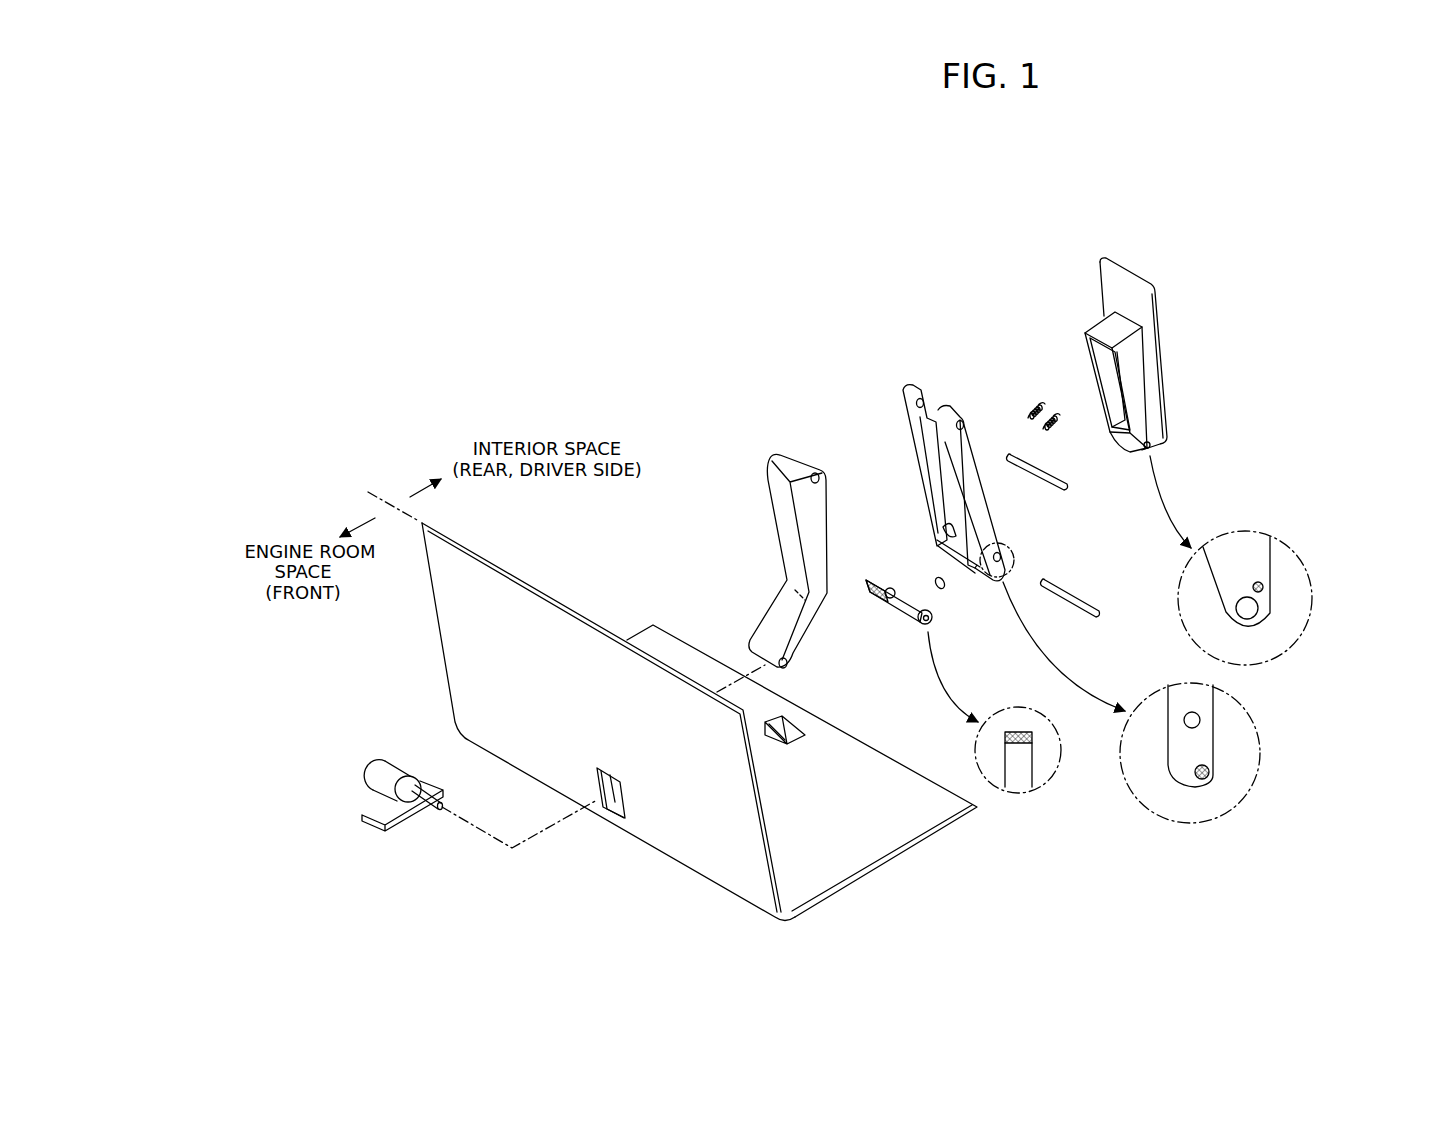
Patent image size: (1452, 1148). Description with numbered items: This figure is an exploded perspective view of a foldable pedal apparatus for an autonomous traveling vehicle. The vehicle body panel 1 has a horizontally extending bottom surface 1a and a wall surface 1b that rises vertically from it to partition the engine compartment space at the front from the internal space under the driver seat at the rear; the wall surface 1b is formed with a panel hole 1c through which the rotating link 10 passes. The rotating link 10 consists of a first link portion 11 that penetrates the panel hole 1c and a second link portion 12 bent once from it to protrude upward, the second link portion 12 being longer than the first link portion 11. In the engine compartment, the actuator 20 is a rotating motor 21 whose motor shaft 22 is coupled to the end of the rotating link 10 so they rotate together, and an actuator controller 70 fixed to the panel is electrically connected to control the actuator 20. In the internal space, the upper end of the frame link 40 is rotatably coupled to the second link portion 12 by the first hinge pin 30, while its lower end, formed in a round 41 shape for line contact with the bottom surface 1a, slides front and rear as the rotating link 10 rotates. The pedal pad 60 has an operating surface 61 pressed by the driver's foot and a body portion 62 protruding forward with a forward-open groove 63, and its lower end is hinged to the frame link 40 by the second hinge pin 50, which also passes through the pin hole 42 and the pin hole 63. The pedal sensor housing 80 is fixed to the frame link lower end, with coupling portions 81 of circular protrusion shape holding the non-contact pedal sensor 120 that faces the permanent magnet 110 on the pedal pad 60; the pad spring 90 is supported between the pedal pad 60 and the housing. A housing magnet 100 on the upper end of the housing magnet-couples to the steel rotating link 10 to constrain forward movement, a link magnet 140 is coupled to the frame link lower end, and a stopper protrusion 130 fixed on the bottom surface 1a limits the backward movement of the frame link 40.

The vehicle body panel 1 is at (672, 725).
The bottom surface 1a is at (860, 860).
The wall surface 1b is at (581, 722).
The panel hole 1c is at (610, 812).
The rotating link 10 is at (765, 529).
The first link portion 11 is at (785, 607).
The second link portion 12 is at (782, 512).
The actuator 20 is at (373, 798).
The rotating motor 21 is at (385, 778).
The motor shaft 22 is at (430, 812).
The first hinge pin 30 is at (1060, 484).
The frame link 40 is at (1078, 632).
The round 41 is at (1182, 782).
The pin hole 42 is at (1190, 716).
The second hinge pin 50 is at (1082, 602).
The pedal pad 60 is at (1169, 445).
The operating surface 61 is at (1145, 306).
The body portion 62 is at (1169, 467).
The groove 63 is at (1097, 359).
The actuator controller 70 is at (370, 816).
The pedal sensor housing 80 is at (950, 685).
The coupling portions 81 is at (933, 623).
The pad spring 90 is at (1046, 415).
The housing magnet 100 is at (867, 582).
The permanent magnet 110 is at (1258, 582).
The non-contact pedal sensor 120 is at (948, 590).
The stopper protrusion 130 is at (788, 725).
The link magnet 140 is at (1210, 773).